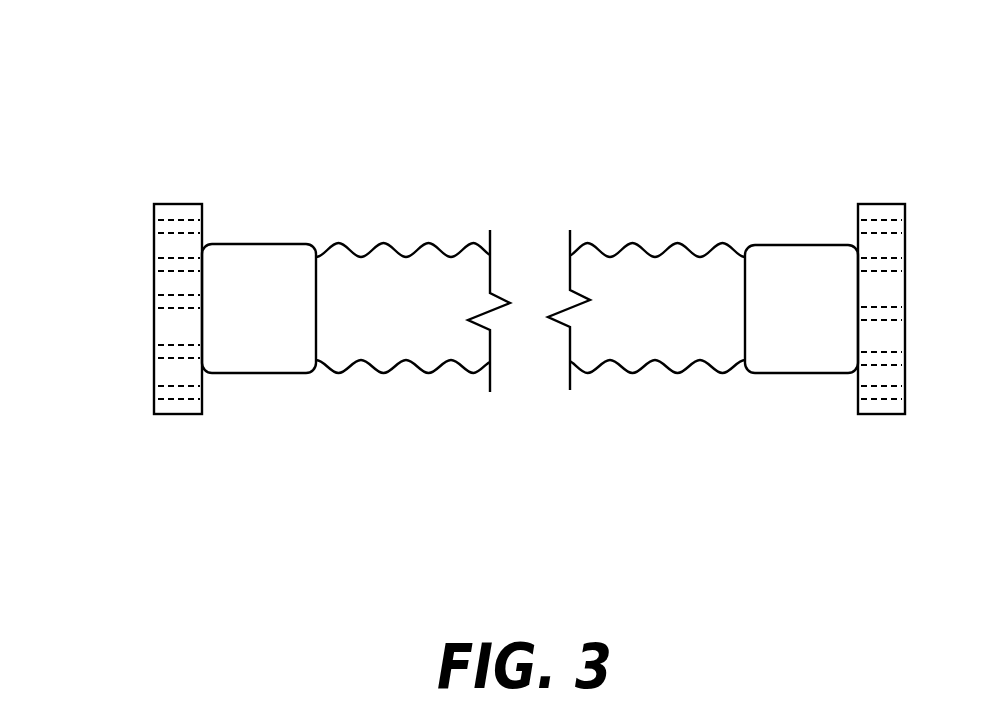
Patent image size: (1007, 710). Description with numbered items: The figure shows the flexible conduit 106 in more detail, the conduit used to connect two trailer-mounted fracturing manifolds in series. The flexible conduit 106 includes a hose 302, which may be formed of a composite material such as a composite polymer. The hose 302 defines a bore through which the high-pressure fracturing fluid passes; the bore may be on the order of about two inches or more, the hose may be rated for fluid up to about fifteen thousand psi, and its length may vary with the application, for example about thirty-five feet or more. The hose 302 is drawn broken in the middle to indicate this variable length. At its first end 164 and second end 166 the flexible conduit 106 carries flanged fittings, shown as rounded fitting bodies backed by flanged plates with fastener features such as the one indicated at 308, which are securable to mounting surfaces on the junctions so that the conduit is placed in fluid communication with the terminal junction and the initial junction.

The flexible conduit 106 is at (226, 100).
The second end 166 is at (274, 150).
The first end 164 is at (766, 149).
The hose 302 is at (422, 320).
The fastener hole 308 is at (183, 400).